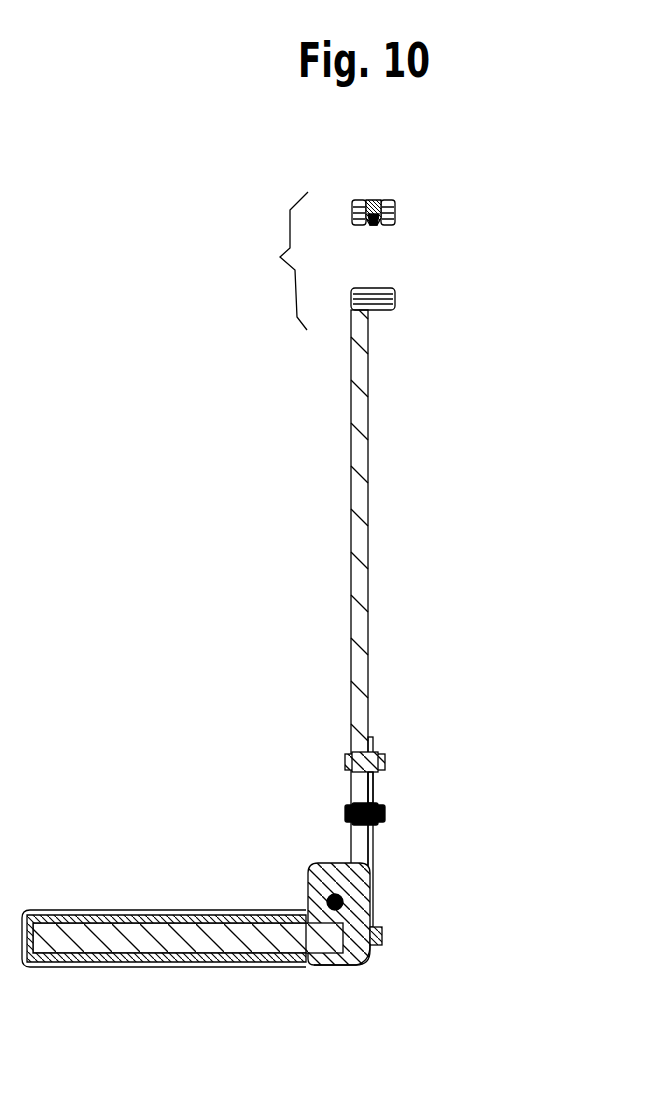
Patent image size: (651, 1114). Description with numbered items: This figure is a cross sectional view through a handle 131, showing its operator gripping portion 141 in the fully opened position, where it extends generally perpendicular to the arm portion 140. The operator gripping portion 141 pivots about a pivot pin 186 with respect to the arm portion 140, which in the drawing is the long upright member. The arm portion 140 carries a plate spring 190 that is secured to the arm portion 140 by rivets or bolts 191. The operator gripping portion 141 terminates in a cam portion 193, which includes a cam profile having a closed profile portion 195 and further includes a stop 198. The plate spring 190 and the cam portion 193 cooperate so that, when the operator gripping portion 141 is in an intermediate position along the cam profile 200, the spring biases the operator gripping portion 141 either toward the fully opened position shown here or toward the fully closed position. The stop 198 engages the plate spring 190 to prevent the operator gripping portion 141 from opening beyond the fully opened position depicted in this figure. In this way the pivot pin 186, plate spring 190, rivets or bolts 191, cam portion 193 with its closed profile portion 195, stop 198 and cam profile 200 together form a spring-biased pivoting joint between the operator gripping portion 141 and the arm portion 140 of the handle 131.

The handle 131 is at (305, 696).
The arm portion 140 is at (330, 461).
The operator gripping portion 141 is at (148, 910).
The pivot pin 186 is at (371, 893).
The plate spring 190 is at (373, 793).
The rivets or bolts 191 is at (386, 768).
The cam portion 193 is at (340, 966).
The closed profile portion 195 is at (313, 867).
The stop 198 is at (373, 925).
The cam profile 200 is at (382, 945).